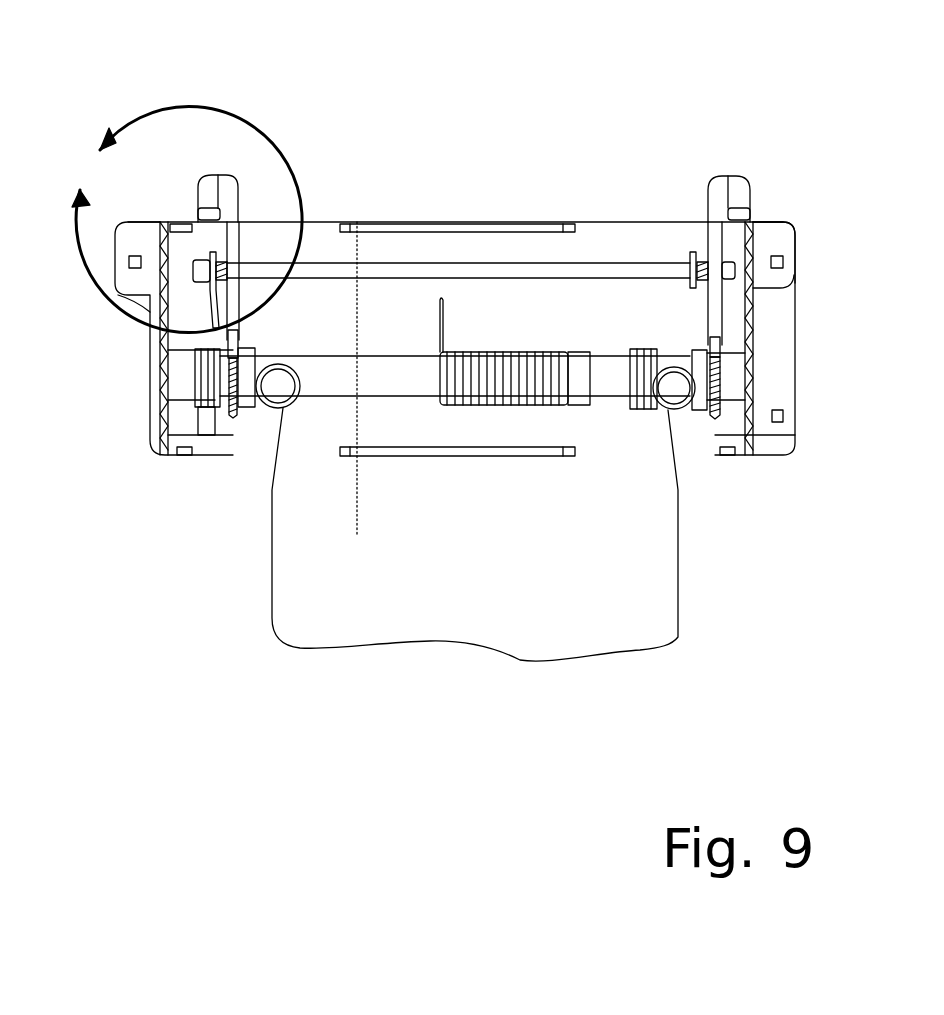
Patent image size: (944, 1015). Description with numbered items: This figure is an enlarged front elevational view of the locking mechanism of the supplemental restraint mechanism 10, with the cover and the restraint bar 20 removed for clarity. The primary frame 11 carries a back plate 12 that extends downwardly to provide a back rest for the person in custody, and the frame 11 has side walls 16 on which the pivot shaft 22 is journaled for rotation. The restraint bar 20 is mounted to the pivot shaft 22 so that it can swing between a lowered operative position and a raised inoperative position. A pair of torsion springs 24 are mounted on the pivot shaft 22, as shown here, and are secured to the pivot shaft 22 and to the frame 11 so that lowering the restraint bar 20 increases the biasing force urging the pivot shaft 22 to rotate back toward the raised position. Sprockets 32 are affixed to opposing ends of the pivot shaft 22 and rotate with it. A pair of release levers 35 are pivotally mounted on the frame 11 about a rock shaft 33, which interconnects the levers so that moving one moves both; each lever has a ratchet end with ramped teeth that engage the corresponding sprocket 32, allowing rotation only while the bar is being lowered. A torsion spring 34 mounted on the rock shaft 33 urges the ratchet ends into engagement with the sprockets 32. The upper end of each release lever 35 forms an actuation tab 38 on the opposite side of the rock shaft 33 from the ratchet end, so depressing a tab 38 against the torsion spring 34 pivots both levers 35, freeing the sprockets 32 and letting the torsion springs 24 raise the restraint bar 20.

The supplemental restraint mechanism 10 is at (658, 25).
The primary frame 11 is at (755, 222).
The back plate 12 is at (637, 637).
The side walls 16 is at (160, 420).
The restraint bar 20 is at (272, 483).
The pivot shaft 22 is at (355, 380).
The torsion springs 24 is at (500, 358).
The sprockets 32 is at (237, 372).
The rock shaft 33 is at (380, 270).
The torsion spring 34 is at (233, 312).
The release levers 35 is at (240, 238).
The actuation tab 38 is at (216, 178).